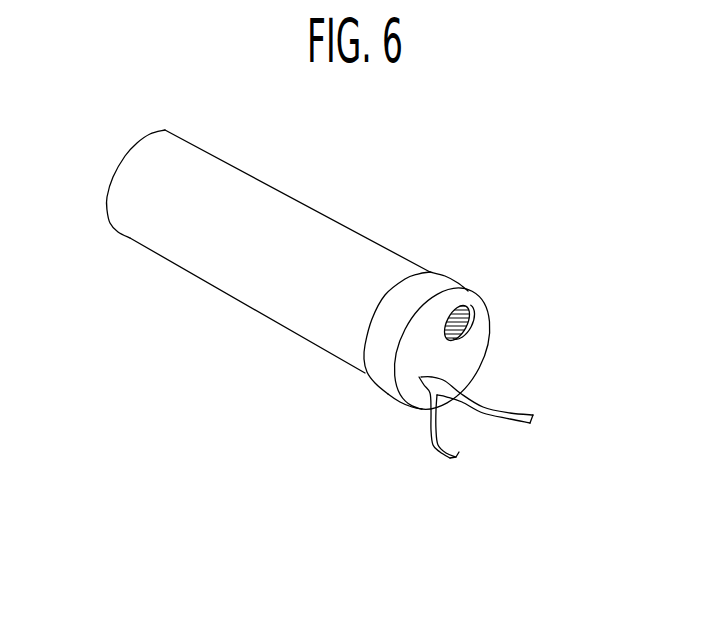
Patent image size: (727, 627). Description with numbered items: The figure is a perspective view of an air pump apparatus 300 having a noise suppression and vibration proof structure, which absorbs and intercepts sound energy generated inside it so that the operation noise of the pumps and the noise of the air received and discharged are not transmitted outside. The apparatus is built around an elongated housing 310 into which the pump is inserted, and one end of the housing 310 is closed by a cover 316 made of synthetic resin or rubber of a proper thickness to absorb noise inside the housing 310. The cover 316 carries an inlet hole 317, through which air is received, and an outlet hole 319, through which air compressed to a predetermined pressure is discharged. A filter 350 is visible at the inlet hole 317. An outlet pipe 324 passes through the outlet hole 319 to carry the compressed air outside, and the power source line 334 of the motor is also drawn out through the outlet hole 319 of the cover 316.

The air pump apparatus 300 is at (80, 118).
The housing 310 is at (315, 208).
The cover 316 is at (431, 270).
The inlet hole 317 is at (472, 327).
The outlet hole 319 is at (398, 394).
The outlet pipe 324 is at (524, 410).
The power source line 334 is at (432, 453).
The filter 350 is at (462, 306).